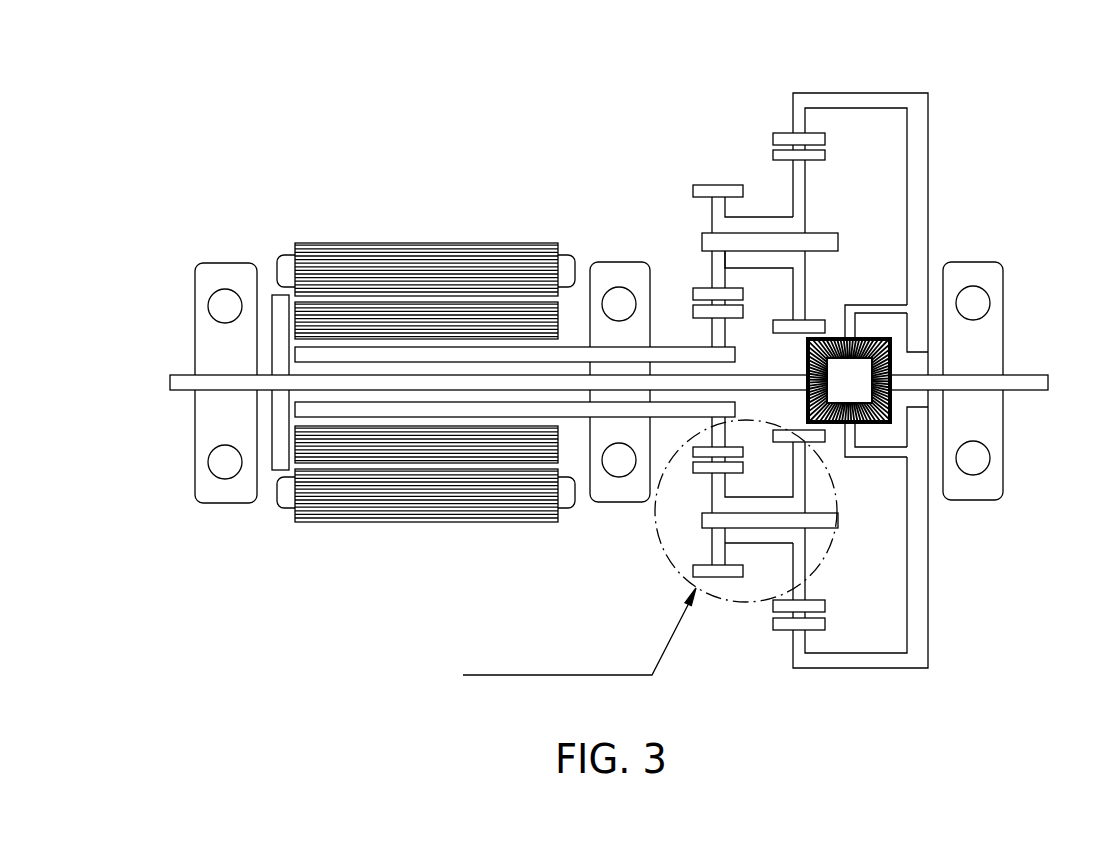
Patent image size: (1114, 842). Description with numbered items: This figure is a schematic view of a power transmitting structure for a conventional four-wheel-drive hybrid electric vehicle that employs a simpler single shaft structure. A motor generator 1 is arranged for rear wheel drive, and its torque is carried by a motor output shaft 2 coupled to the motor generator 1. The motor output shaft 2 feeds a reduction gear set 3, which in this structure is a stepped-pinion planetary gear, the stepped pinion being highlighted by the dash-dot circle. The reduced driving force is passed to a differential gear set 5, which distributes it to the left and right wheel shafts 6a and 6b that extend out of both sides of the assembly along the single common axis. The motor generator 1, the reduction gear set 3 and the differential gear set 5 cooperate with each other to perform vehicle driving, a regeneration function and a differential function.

The motor generator 1 is at (417, 262).
The motor output shaft 2 is at (670, 352).
The reduction gear set 3 is at (762, 192).
The differential gear set 5 is at (870, 326).
The left wheel shaft 6a is at (182, 381).
The right wheel shaft 6b is at (1025, 378).